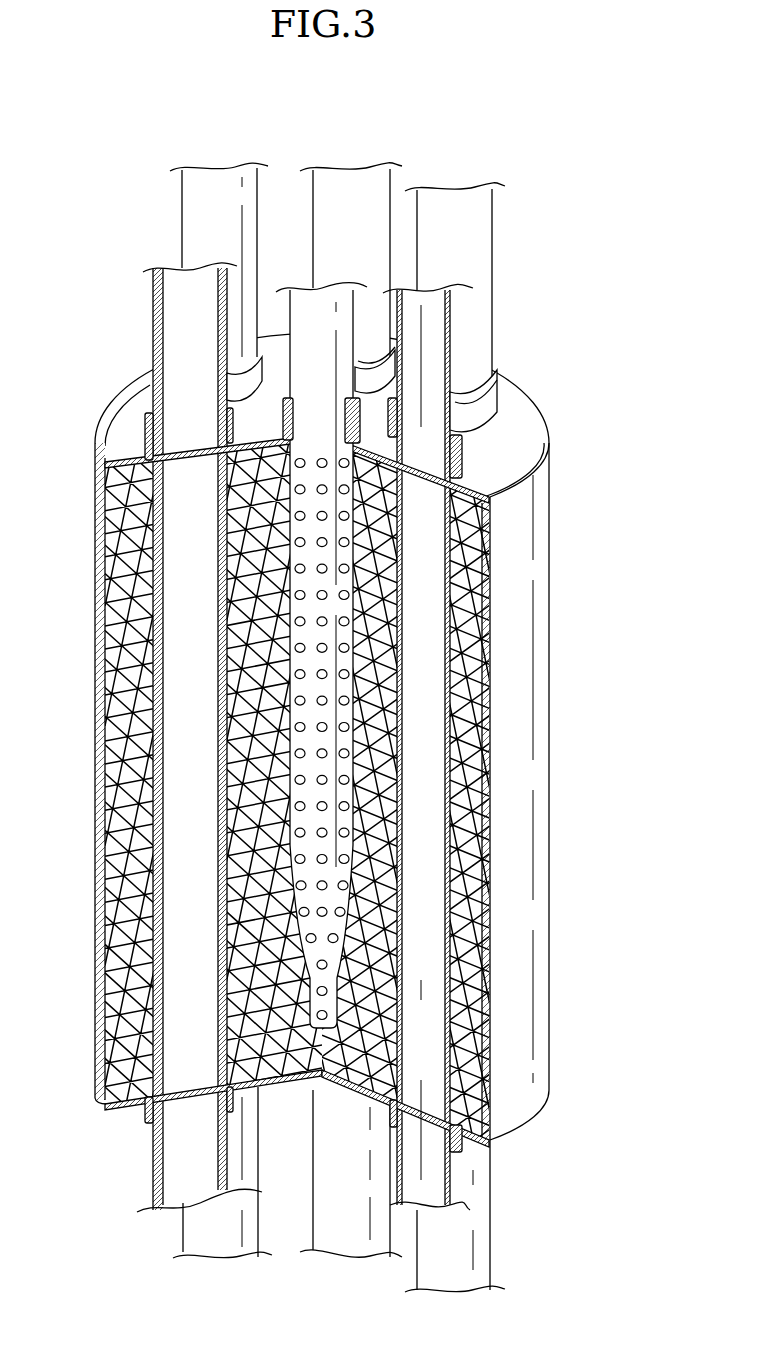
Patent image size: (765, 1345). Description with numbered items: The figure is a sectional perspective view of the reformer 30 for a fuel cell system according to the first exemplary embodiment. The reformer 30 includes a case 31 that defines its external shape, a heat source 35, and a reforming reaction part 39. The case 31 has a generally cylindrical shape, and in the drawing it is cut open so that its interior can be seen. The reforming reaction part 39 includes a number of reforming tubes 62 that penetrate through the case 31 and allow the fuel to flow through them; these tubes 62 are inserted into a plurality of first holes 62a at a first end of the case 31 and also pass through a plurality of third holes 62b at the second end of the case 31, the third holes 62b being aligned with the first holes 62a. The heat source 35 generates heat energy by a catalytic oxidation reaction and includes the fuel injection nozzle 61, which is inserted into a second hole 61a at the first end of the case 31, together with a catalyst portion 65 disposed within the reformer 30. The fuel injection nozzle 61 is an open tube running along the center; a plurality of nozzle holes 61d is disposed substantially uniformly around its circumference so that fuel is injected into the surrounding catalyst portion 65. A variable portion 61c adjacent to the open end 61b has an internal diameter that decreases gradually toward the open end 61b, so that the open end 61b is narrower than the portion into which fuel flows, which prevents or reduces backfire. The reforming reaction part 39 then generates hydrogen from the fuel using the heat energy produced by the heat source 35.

The reformer 30 is at (560, 646).
The case 31 is at (540, 560).
The heat source 35 is at (636, 868).
The reforming reaction part 39 is at (458, 747).
The fuel injection nozzle 61 is at (346, 870).
The second hole 61a is at (290, 415).
The open end 61b is at (305, 1076).
The variable portion 61c is at (338, 950).
The nozzle holes 61d is at (326, 832).
The reforming tube 62 is at (488, 259).
The first holes 62a is at (468, 456).
The third holes 62b is at (147, 1121).
The catalyst portion 65 is at (356, 903).